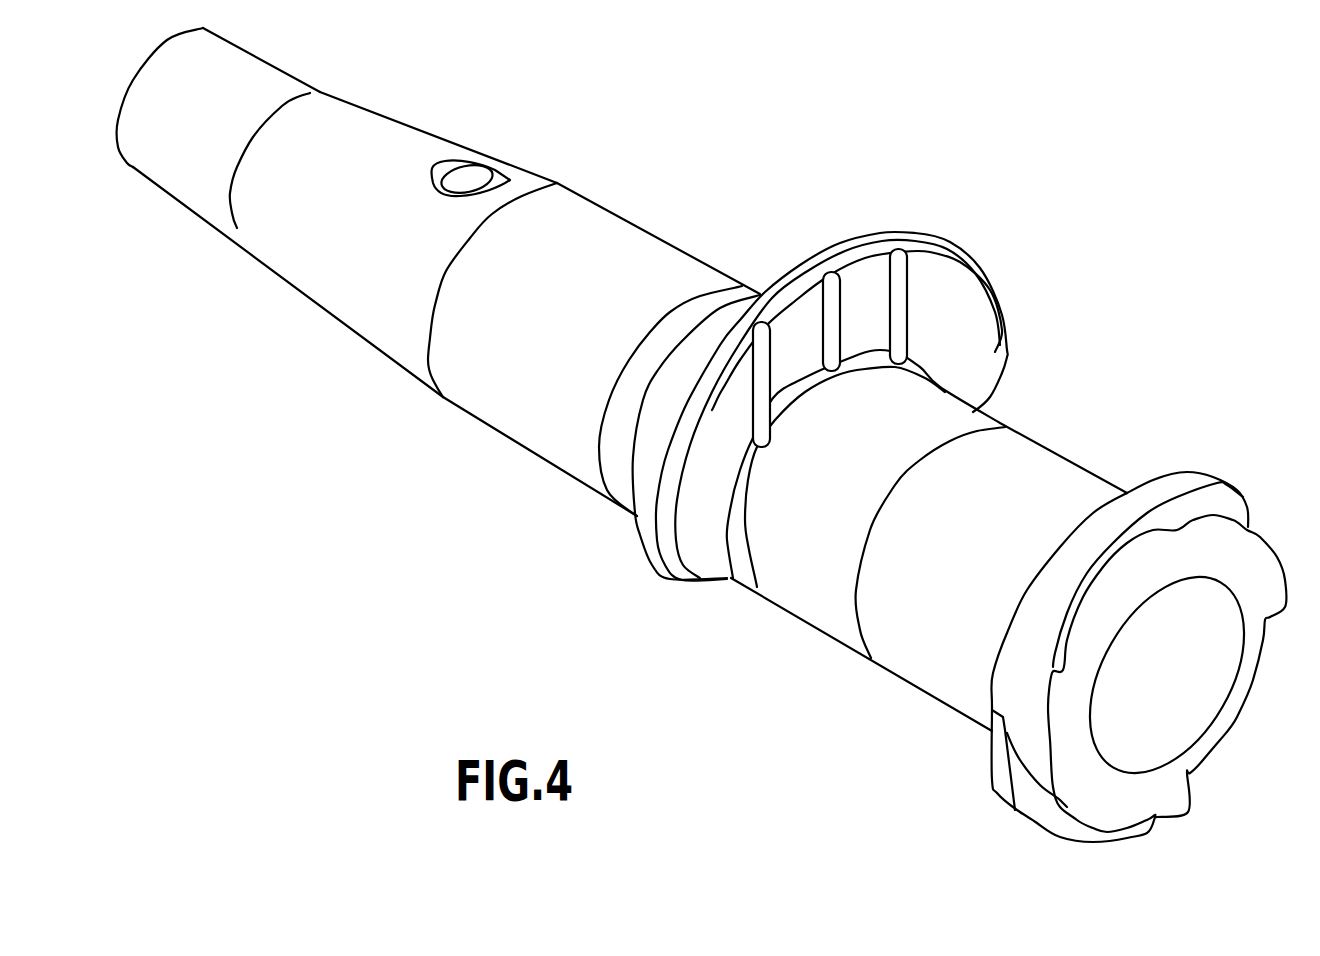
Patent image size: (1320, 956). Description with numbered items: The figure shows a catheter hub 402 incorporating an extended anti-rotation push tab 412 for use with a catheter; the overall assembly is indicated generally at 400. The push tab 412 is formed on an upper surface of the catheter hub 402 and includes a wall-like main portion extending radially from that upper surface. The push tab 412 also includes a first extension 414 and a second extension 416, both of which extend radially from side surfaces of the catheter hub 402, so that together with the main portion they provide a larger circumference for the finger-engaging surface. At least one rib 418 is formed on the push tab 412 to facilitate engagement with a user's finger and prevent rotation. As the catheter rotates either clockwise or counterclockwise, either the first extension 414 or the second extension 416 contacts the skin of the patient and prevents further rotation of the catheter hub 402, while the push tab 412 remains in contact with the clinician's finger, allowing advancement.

The intravascular device assembly 400 is at (795, 146).
The catheter hub 402 is at (300, 240).
The push tab 412 is at (835, 253).
The first extension 414 is at (645, 540).
The second extension 416 is at (1002, 371).
The rib 418 is at (897, 280).